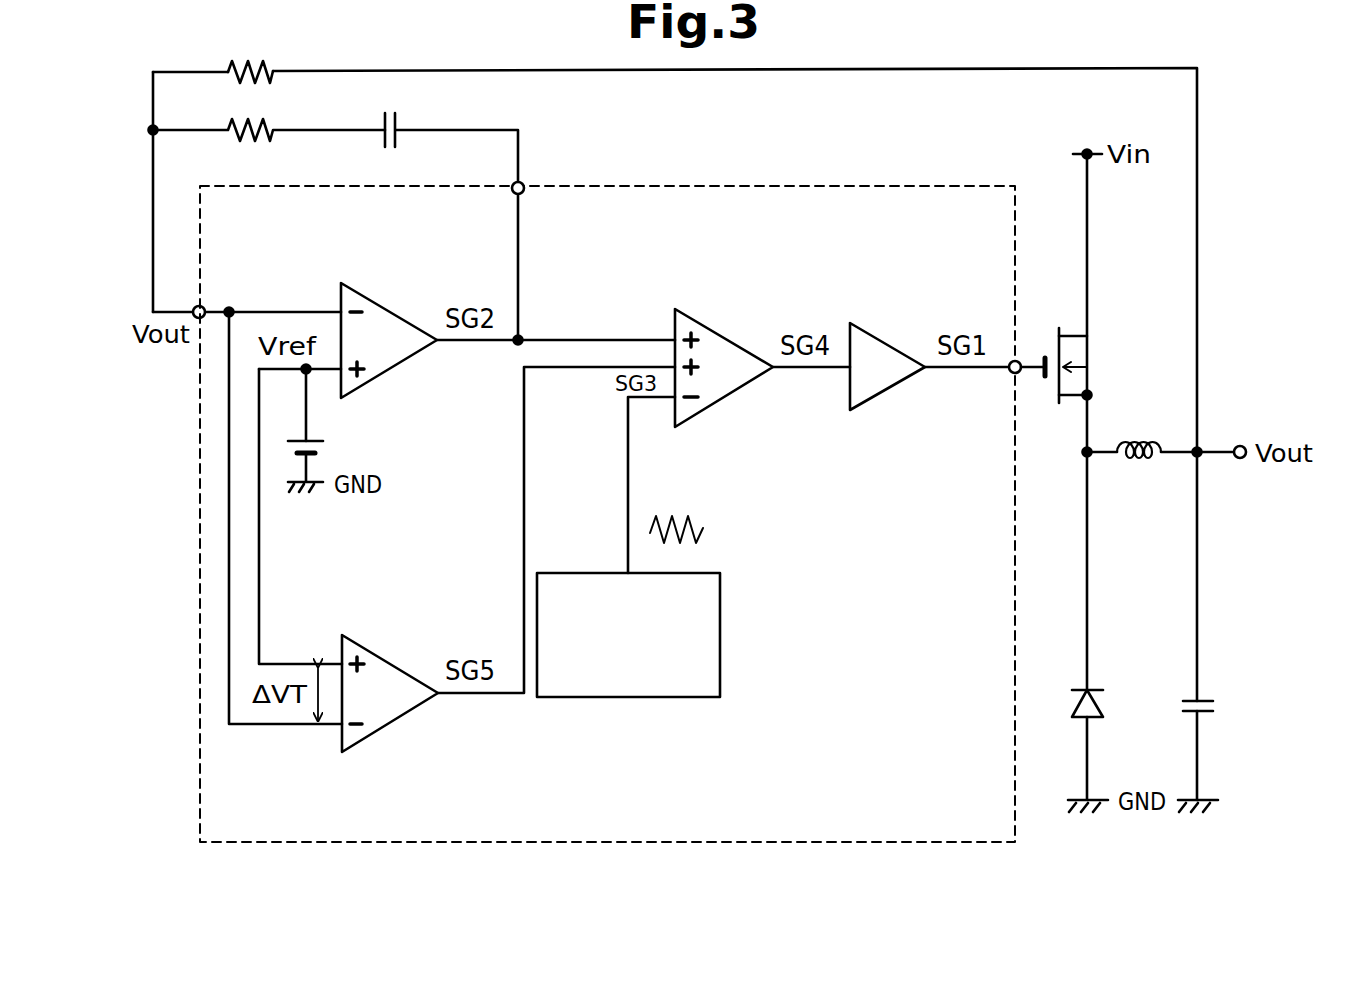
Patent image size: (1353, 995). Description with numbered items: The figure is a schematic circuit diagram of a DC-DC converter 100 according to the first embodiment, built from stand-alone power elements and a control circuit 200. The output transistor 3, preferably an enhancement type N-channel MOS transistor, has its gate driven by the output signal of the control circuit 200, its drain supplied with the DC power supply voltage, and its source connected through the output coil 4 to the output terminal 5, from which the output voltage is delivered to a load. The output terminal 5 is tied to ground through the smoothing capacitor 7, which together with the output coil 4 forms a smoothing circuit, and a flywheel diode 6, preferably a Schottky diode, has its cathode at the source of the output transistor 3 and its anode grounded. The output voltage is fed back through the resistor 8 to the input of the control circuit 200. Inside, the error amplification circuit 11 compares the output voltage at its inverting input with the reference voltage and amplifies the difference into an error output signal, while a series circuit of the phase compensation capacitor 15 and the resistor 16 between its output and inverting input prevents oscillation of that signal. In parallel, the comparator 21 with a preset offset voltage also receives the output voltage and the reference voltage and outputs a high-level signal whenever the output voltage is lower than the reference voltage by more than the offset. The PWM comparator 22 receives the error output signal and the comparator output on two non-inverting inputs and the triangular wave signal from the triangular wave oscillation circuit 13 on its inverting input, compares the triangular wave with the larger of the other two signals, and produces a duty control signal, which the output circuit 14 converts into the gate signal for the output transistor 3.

The DC-DC converter 100 is at (1252, 817).
The control circuit 200 is at (865, 186).
The output transistor 3 is at (1058, 340).
The output coil 4 is at (1150, 440).
The output terminal 5 is at (1240, 445).
The flywheel diode 6 is at (1105, 707).
The smoothing capacitor 7 is at (1212, 697).
The resistor 8 is at (262, 70).
The error amplification circuit 11 is at (396, 372).
The triangular wave oscillation circuit 13 is at (722, 604).
The output circuit 14 is at (880, 410).
The phase compensation capacitor 15 is at (397, 125).
The resistor 16 is at (262, 128).
The comparator with an offset voltage 21 is at (388, 657).
The PWM comparator 22 is at (725, 335).